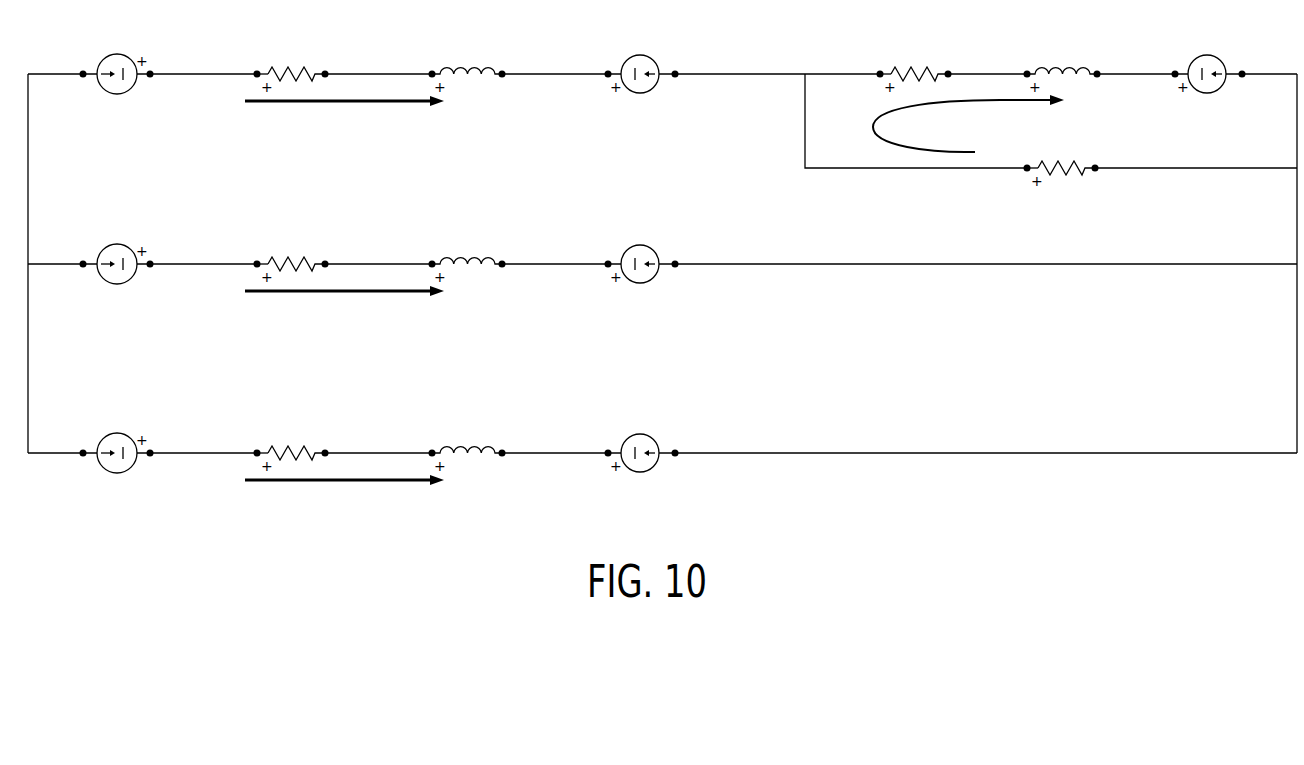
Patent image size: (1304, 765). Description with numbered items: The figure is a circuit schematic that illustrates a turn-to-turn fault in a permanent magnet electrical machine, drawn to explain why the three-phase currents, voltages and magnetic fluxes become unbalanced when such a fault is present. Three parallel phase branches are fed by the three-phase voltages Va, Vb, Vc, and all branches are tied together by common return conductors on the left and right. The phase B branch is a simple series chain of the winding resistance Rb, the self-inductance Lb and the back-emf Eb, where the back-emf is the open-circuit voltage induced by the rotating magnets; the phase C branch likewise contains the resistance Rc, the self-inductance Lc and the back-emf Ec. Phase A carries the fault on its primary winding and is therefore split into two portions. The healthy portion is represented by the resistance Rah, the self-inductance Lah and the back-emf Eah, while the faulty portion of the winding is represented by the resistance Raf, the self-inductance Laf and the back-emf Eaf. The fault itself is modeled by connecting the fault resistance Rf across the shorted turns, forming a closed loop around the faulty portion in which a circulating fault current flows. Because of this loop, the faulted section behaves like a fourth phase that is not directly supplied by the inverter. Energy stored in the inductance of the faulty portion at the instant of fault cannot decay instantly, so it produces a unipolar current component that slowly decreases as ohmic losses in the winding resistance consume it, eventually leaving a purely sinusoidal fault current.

The phase A voltage Va is at (117, 60).
The phase B voltage Vb is at (117, 250).
The phase C voltage Vc is at (117, 440).
The resistance of healthy portion of phase A winding Rah is at (291, 61).
The self-inductance of healthy portion of phase A winding Lah is at (467, 61).
The back-emf of healthy portion of phase A winding Eah is at (642, 61).
The resistance of faulty portion of phase A winding Raf is at (915, 61).
The self-inductance of faulty portion of phase A winding Laf is at (1063, 61).
The back-emf of faulty portion of phase A winding Eaf is at (1209, 61).
The fault resistance Rf is at (1061, 191).
The phase B winding resistance Rb is at (291, 251).
The phase B self-inductance Lb is at (467, 251).
The phase B back-emf Eb is at (642, 251).
The phase C winding resistance Rc is at (291, 440).
The phase C self-inductance Lc is at (467, 440).
The phase C back-emf Ec is at (642, 440).